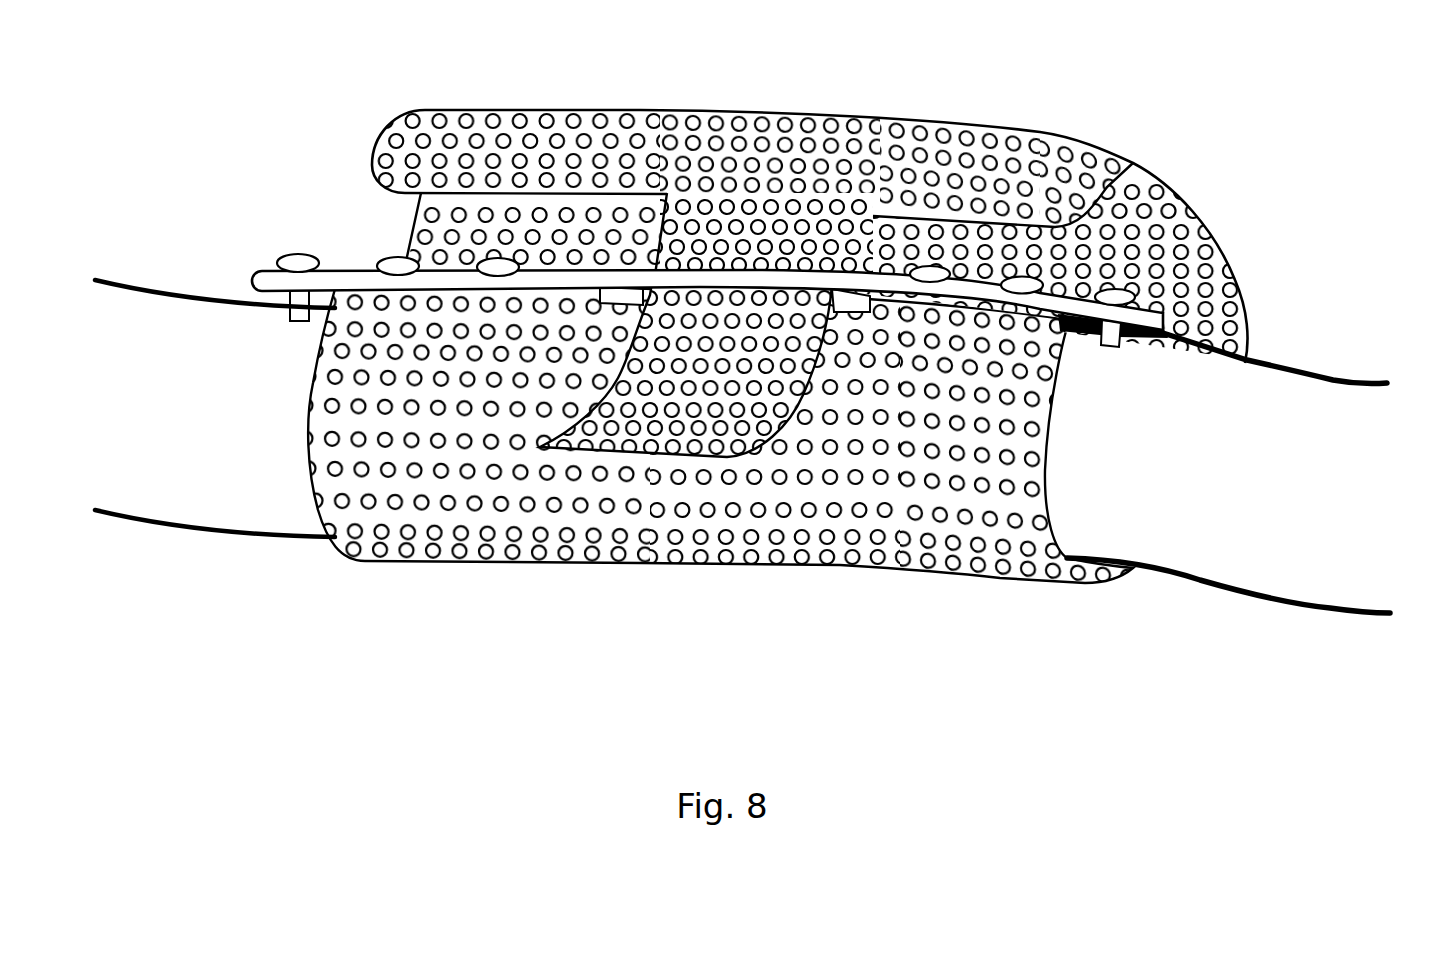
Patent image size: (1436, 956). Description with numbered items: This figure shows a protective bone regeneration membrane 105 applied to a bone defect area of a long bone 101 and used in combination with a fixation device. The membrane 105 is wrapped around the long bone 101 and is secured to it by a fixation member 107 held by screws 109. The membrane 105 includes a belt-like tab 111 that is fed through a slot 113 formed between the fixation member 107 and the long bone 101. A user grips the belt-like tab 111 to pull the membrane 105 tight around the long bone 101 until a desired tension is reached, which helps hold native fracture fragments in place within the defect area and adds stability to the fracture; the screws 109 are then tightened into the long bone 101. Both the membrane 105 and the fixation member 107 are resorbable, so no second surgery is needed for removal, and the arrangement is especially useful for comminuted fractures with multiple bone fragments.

The long bone 101 is at (1327, 375).
The protective bone regeneration membrane 105 is at (720, 435).
The fixation member 107 is at (343, 270).
The screws 109 is at (287, 255).
The belt-like tab 111 is at (577, 413).
The slot 113 is at (852, 292).